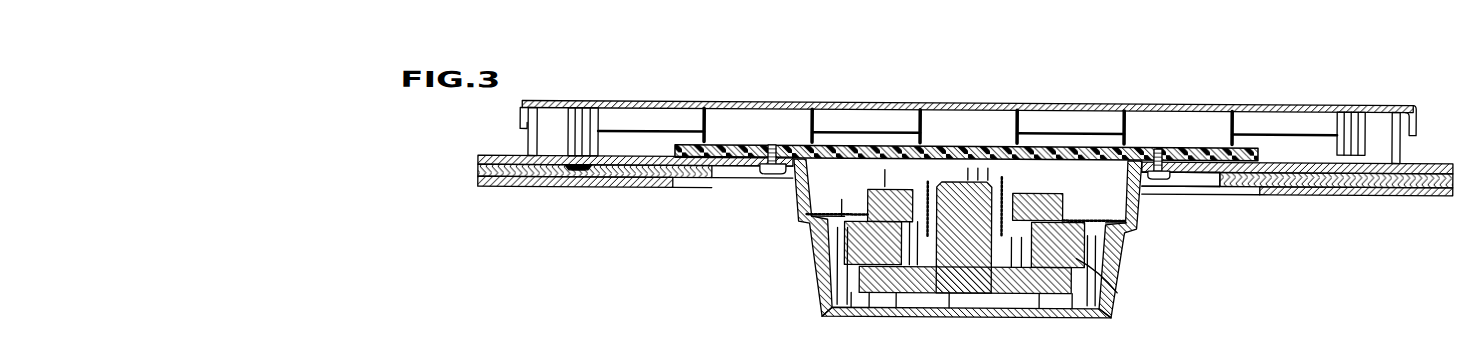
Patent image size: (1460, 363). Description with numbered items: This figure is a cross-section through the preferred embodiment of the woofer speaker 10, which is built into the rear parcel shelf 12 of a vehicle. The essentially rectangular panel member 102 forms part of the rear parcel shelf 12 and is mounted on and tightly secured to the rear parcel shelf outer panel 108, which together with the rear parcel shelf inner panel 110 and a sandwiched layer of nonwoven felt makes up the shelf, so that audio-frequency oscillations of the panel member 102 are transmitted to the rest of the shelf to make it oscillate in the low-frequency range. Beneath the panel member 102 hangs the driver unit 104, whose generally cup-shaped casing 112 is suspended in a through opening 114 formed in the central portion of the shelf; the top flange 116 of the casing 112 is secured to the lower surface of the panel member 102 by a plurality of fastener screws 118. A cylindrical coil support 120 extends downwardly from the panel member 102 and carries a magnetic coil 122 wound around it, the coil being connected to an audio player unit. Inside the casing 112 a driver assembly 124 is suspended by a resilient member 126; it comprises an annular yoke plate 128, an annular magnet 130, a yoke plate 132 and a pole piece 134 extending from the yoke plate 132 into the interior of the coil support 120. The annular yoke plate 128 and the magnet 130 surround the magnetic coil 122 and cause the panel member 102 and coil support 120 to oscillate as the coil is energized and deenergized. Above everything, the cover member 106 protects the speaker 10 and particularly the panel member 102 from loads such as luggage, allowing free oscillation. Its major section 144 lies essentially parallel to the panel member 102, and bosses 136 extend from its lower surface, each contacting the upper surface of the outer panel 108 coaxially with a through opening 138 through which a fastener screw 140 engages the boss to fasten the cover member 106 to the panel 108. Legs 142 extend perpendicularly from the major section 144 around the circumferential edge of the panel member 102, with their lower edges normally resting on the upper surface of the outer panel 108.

The speaker 10 is at (1130, 126).
The rear parcel shelf 12 is at (1427, 162).
The panel member 102 is at (1212, 149).
The driver unit 104 is at (1130, 238).
The cover member 106 is at (972, 103).
The rear parcel shelf outer panel 108 is at (501, 158).
The rear parcel shelf inner panel 110 is at (498, 190).
The casing 112 is at (478, 171).
The through opening 114 is at (1214, 190).
The top flange 116 is at (772, 146).
The fastener screws 118 is at (770, 178).
The coil support 120 is at (1003, 173).
The magnetic coil 122 is at (927, 182).
The driver assembly 124 is at (843, 270).
The resilient member 126 is at (1110, 279).
The annular yoke plate 128 is at (1057, 207).
The annular magnet 130 is at (1113, 311).
The yoke plate 132 is at (1025, 292).
The pole piece 134 is at (950, 263).
The bosses 136 is at (580, 110).
The through opening 138 is at (580, 174).
The fastener screw 140 is at (582, 174).
The legs 142 is at (985, 140).
The major section 144 is at (1113, 103).